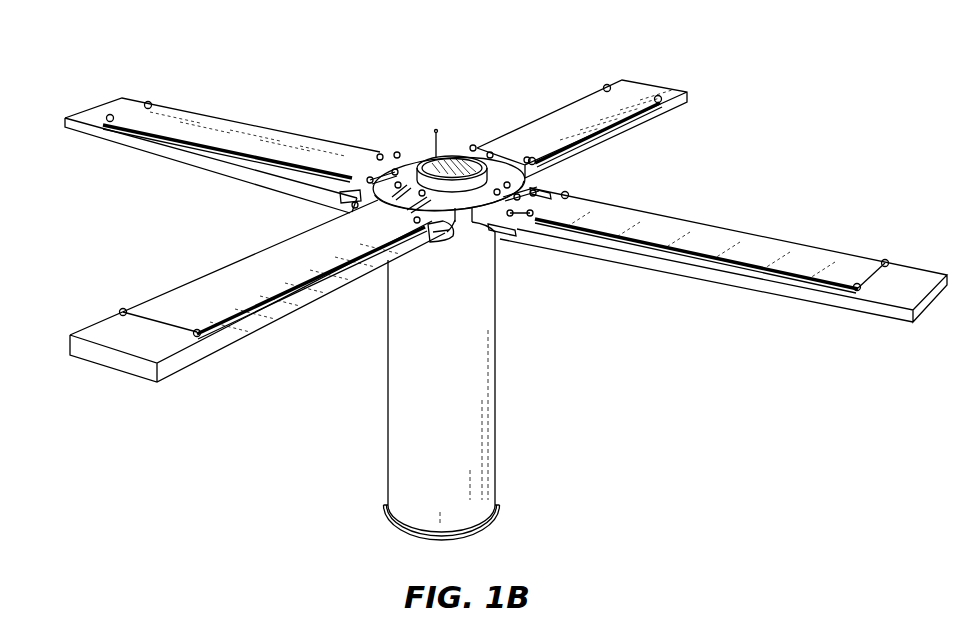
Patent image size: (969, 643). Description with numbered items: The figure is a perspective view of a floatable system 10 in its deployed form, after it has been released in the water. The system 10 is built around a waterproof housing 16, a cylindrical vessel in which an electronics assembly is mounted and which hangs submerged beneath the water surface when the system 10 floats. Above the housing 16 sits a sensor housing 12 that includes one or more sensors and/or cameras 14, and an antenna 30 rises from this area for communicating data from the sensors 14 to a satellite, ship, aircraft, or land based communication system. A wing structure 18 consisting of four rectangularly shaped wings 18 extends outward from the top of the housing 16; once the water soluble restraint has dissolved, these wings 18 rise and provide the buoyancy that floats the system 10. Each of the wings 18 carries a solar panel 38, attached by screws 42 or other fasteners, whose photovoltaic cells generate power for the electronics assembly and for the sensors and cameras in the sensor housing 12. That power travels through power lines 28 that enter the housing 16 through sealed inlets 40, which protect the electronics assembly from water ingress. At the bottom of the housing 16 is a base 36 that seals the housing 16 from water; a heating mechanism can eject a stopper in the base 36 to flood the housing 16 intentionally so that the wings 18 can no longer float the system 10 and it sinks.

The floatable system 10 is at (775, 85).
The sensor housing 12 is at (453, 168).
The sensors and/or cameras 14 is at (477, 148).
The waterproof housing 16 is at (405, 375).
The wing structure 18 is at (70, 335).
The power lines 28 is at (453, 238).
The antenna 30 is at (420, 152).
The base 36 is at (407, 530).
The solar panels 38 is at (212, 132).
The inlets 40 is at (470, 222).
The screws 42 is at (885, 262).